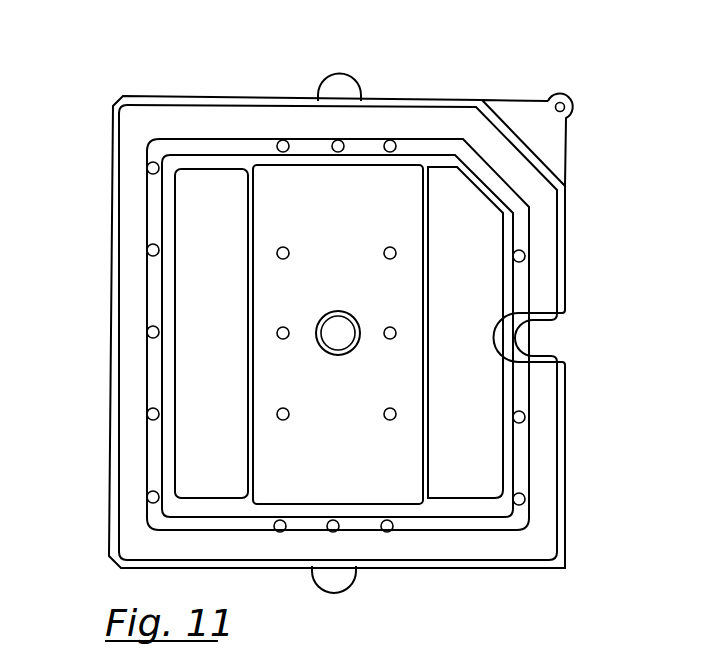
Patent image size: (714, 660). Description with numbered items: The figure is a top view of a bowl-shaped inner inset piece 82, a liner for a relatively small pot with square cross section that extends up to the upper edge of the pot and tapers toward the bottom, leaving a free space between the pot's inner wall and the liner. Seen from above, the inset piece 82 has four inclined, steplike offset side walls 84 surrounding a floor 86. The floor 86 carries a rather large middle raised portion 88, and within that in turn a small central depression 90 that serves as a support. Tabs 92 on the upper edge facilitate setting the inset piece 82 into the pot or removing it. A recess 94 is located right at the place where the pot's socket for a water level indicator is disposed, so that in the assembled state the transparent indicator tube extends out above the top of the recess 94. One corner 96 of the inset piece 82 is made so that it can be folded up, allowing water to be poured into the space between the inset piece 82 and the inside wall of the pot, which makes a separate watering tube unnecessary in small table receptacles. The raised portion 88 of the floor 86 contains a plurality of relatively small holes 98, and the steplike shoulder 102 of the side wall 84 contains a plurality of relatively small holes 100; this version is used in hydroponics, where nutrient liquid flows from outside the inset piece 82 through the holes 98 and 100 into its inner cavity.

The inner inset piece 82 is at (415, 100).
The side walls 84 is at (542, 453).
The floor 86 is at (467, 459).
The middle raised portion 88 is at (372, 465).
The central depression 90 is at (338, 340).
The tabs 92 is at (349, 81).
The recess 94 is at (536, 335).
The corner 96 is at (552, 142).
The holes 98 is at (290, 247).
The holes 100 is at (148, 328).
The steplike shoulder 102 is at (152, 282).